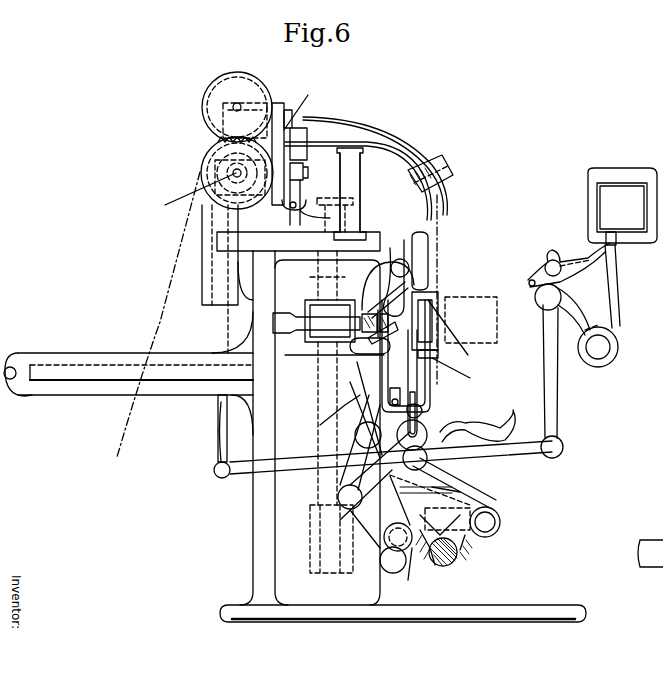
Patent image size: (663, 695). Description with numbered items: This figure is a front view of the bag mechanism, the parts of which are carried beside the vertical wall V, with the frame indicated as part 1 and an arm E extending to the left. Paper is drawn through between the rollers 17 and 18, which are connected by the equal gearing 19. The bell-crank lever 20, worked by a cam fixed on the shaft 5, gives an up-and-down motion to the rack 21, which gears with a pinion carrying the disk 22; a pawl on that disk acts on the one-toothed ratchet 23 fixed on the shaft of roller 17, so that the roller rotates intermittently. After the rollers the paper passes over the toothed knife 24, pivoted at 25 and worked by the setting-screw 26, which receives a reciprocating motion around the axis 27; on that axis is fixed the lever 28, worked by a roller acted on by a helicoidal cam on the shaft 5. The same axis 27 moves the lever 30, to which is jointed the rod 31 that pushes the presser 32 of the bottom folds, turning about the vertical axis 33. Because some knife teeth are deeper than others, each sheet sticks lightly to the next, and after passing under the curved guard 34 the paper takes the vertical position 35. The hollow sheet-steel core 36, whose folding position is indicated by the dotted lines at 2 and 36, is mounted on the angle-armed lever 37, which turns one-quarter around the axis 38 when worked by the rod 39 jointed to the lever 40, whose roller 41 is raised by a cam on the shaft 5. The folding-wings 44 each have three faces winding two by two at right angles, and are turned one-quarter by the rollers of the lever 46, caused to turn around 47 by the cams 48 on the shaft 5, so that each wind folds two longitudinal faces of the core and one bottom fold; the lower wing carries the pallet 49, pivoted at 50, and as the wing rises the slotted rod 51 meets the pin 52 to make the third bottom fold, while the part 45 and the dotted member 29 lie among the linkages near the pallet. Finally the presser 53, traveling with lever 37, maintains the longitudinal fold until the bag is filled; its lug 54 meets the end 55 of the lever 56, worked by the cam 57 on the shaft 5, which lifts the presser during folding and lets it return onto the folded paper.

The casing 1 is at (600, 190).
The dotted-line position of the core 2 is at (478, 289).
The shaft 5 is at (450, 560).
The roller 17 is at (205, 173).
The roller 18 is at (202, 112).
The equal gearing 19 is at (237, 132).
The bell-crank lever 20 is at (226, 465).
The rack 21 is at (215, 308).
The disk 22 is at (298, 146).
The one-toothed ratchet 23 is at (191, 189).
The toothed knife 24 is at (298, 180).
The pivot of the knife 25 is at (307, 135).
The setting-screw 26 is at (295, 225).
The axis 27 is at (337, 198).
The lever 28 is at (438, 500).
The plate 29 is at (445, 521).
The lever 30 is at (312, 310).
The rod 31 is at (285, 334).
The presser 32 is at (449, 327).
The vertical axis 33 is at (453, 367).
The curved guard 34 is at (400, 136).
The vertical position 35 is at (442, 248).
The hollow core 36 is at (480, 286).
The angle-armed lever 37 is at (577, 290).
The axis 38 is at (605, 347).
The rod 39 is at (552, 388).
The lever 40 is at (525, 447).
The roller 41 is at (448, 497).
The folding-wings 44 is at (405, 240).
The arm 45 is at (385, 300).
The lever 46 is at (362, 298).
The pivot of lever 46 47 is at (359, 452).
The cams 48 is at (412, 570).
The pallet 49 is at (422, 435).
The pivot of the pallet 50 is at (373, 410).
The slotted rod 51 is at (412, 378).
The pin 52 is at (424, 418).
The presser 53 is at (620, 240).
The lug 54 is at (548, 250).
The end of lever 56 55 is at (513, 418).
The lever 56 is at (475, 508).
The cam 57 is at (470, 550).
The arm E is at (128, 314).
The vertical wall V is at (262, 293).